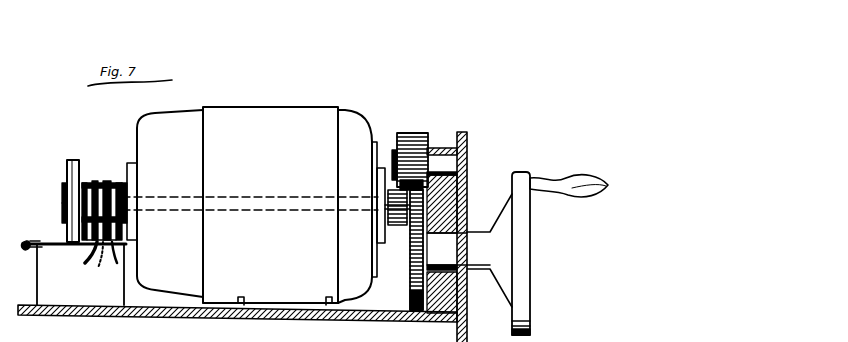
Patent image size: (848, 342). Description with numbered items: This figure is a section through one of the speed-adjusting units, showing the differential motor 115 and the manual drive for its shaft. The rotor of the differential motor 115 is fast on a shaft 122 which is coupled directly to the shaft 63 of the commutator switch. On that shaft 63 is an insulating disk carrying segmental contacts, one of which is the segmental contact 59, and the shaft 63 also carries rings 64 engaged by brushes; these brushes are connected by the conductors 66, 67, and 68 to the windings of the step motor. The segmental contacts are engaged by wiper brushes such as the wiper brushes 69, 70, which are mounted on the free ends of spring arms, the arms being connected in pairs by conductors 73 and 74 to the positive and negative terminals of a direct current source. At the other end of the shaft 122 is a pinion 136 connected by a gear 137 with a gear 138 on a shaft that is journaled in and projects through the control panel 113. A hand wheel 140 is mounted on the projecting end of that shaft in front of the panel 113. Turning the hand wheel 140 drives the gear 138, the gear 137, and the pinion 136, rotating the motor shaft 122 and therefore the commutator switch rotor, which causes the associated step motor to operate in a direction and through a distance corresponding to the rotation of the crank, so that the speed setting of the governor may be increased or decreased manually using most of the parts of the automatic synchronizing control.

The segmental contact 59 is at (67, 167).
The shaft 63 is at (77, 160).
The rings 64 is at (106, 183).
The conductor 66 is at (115, 263).
The conductor 67 is at (84, 262).
The conductor 68 is at (90, 264).
The wiper brush 69 is at (62, 190).
The wiper brush 70 is at (62, 210).
The conductor 73 is at (25, 242).
The conductor 74 is at (35, 255).
The control panel 113 is at (468, 145).
The differential motor 115 is at (273, 108).
The shaft 122 is at (285, 196).
The pinion 136 is at (399, 226).
The gear 137 is at (413, 132).
The gear 138 is at (410, 295).
The hand wheel 140 is at (522, 281).